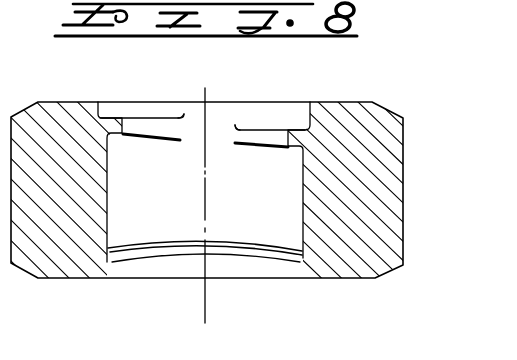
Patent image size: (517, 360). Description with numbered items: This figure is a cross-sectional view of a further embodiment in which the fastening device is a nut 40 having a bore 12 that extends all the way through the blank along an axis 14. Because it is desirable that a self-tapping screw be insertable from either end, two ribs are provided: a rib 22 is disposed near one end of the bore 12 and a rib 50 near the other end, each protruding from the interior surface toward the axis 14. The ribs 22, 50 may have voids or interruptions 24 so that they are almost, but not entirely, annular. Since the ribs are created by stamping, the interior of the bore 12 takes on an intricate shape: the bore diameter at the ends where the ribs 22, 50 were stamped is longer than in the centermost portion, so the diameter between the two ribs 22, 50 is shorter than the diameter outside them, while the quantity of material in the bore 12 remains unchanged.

The nut 40 is at (374, 100).
The bore 12 is at (251, 118).
The rib 22 is at (138, 125).
The interruptions 24 is at (213, 132).
The rib 50 is at (167, 252).
The axis 14 is at (206, 312).